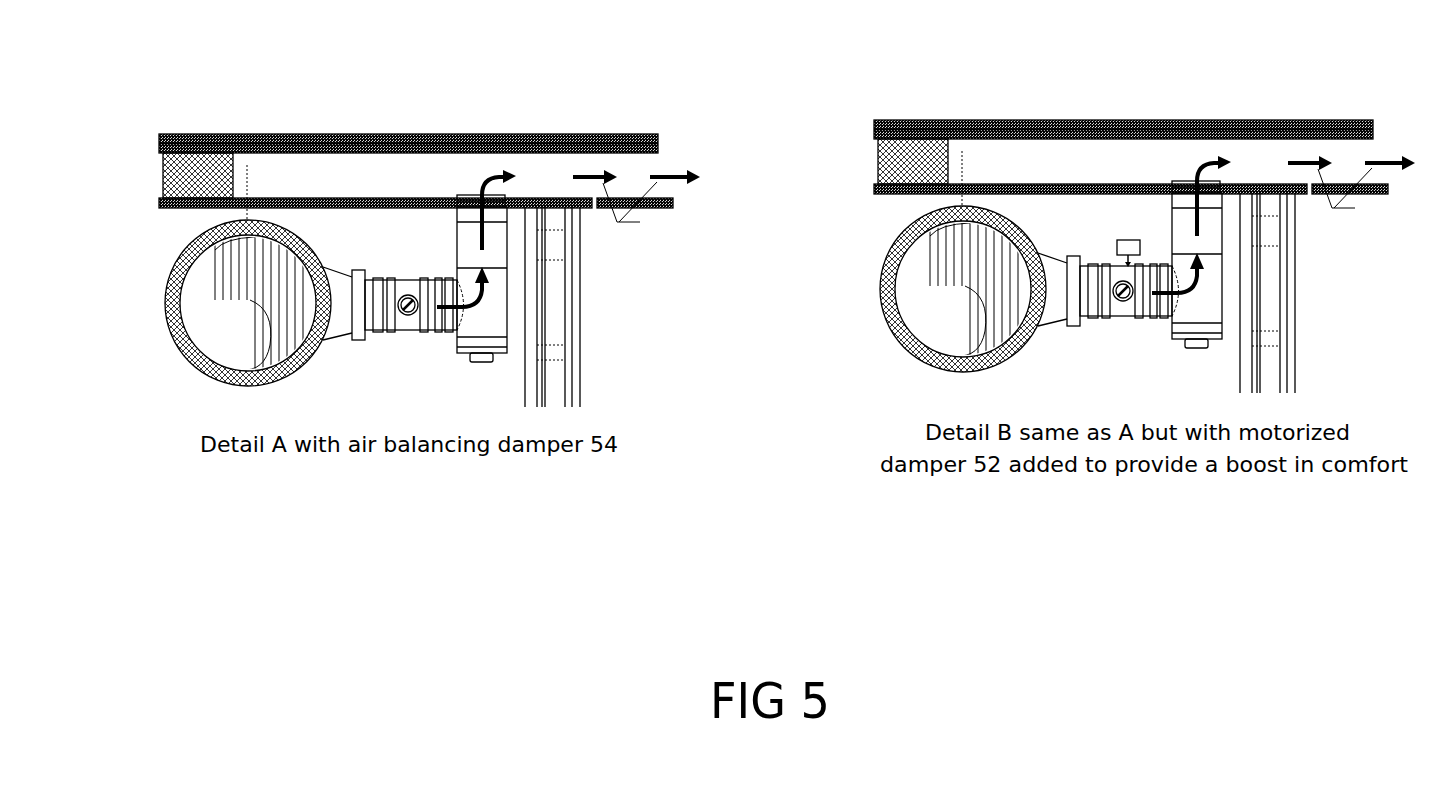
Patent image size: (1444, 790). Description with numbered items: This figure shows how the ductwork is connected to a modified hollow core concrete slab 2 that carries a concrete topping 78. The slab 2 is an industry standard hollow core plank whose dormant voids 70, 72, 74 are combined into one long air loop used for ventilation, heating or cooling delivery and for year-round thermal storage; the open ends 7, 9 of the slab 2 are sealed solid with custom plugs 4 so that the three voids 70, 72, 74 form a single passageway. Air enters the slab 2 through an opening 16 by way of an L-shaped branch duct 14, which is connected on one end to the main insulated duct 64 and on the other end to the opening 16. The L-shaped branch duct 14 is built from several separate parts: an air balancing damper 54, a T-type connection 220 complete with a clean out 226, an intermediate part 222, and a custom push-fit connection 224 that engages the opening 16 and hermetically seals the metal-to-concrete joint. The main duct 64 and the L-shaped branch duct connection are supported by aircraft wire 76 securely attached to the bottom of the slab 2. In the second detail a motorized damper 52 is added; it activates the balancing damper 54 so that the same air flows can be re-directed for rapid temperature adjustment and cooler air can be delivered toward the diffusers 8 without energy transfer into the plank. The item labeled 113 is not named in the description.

The hollow core slab 2 is at (345, 207).
The custom plug 4 is at (167, 180).
The open end 7 is at (207, 142).
The open end 9 is at (766, 106).
The diffuser 8 is at (926, 178).
The L-shaped branch duct 14 is at (375, 342).
The opening 16 is at (472, 197).
The motorized damper 52 is at (1123, 242).
The air balancing damper 54 is at (453, 357).
The main insulated duct 64 is at (307, 365).
The void 70 is at (926, 190).
The void 72 is at (926, 190).
The void 74 is at (686, 168).
The aircraft wire 76 is at (428, 197).
The concrete topping 78 is at (450, 137).
The damper outlet 113 is at (460, 191).
The T-type connection 220 is at (493, 312).
The intermediate part 222 is at (493, 260).
The custom push-fit connection 224 is at (507, 215).
The clean out 226 is at (503, 353).